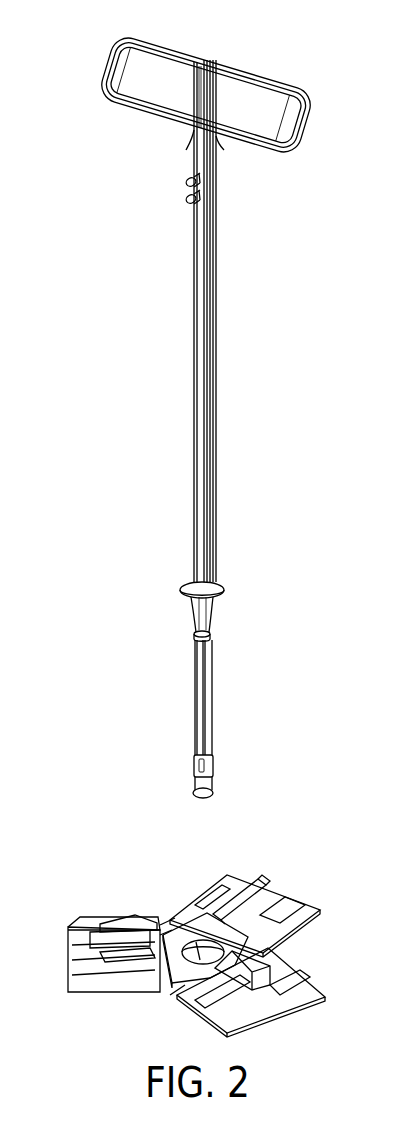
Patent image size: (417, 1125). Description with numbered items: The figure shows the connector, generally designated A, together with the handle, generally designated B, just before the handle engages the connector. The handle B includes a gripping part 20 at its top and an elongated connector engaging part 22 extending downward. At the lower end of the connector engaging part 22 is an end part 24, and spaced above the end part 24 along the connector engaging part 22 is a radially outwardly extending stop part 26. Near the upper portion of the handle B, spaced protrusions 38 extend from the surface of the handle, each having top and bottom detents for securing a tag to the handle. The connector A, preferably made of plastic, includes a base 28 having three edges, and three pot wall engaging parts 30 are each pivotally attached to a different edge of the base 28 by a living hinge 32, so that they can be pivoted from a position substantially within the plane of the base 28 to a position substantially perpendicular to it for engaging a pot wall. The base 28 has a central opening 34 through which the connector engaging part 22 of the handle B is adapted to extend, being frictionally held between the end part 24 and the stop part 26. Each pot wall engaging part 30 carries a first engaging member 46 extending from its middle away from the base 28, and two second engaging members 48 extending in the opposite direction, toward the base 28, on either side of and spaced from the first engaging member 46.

The gripping part 20 is at (248, 62).
The elongated connector engaging part 22 is at (193, 338).
The end part 24 is at (214, 795).
The stop part 26 is at (226, 587).
The base 28 is at (160, 968).
The pot wall engaging part 30 is at (315, 925).
The living hinge 32 is at (175, 925).
The central opening 34 is at (173, 965).
The spaced protrusions 38 is at (190, 197).
The first engaging member 46 is at (248, 880).
The second engaging members 48 is at (213, 887).
The connector A is at (298, 886).
The handle B is at (232, 386).